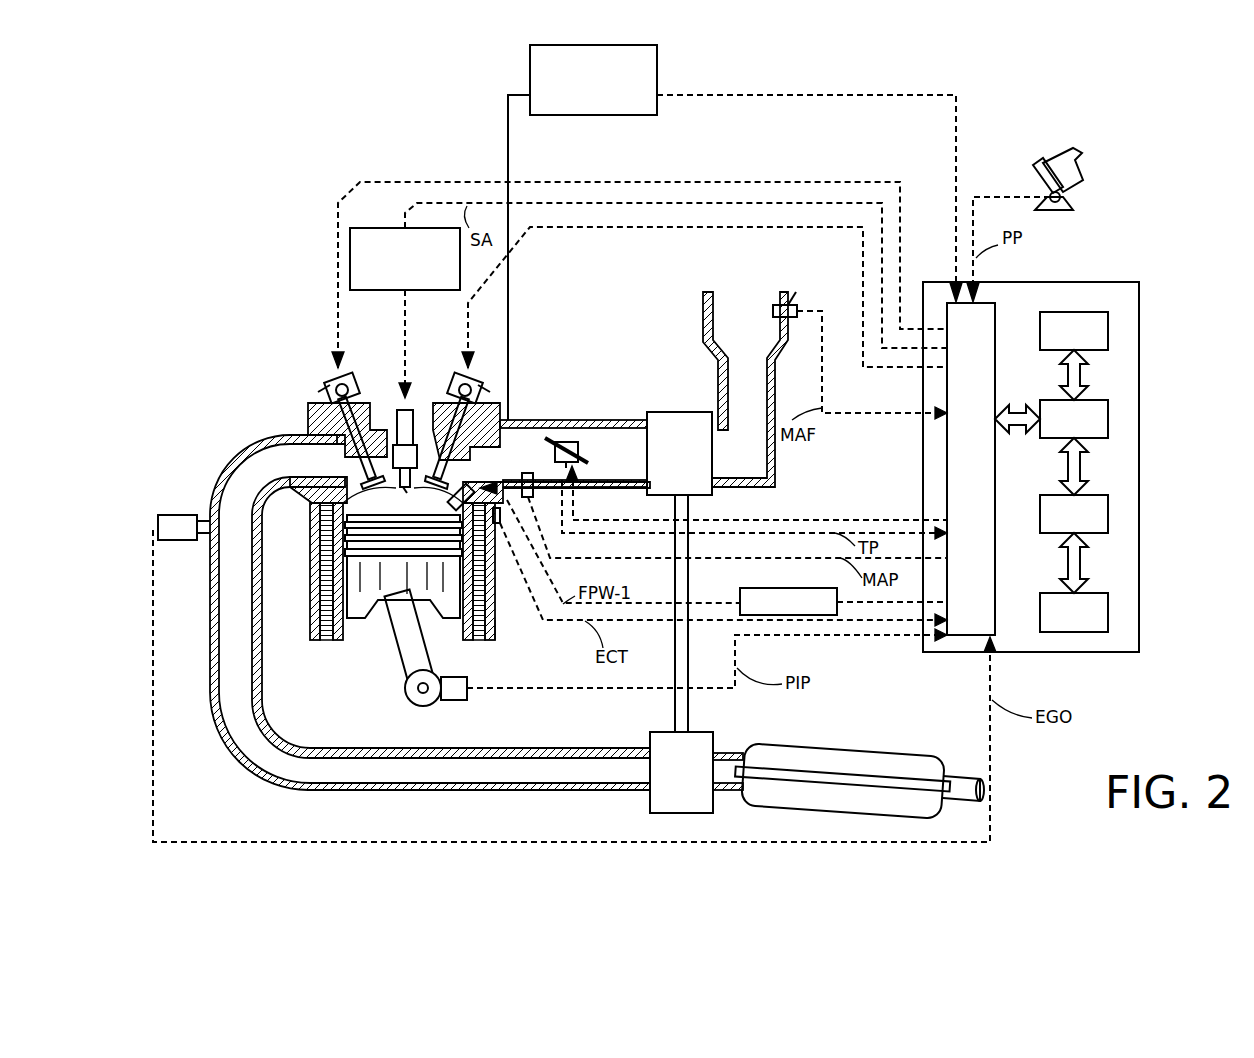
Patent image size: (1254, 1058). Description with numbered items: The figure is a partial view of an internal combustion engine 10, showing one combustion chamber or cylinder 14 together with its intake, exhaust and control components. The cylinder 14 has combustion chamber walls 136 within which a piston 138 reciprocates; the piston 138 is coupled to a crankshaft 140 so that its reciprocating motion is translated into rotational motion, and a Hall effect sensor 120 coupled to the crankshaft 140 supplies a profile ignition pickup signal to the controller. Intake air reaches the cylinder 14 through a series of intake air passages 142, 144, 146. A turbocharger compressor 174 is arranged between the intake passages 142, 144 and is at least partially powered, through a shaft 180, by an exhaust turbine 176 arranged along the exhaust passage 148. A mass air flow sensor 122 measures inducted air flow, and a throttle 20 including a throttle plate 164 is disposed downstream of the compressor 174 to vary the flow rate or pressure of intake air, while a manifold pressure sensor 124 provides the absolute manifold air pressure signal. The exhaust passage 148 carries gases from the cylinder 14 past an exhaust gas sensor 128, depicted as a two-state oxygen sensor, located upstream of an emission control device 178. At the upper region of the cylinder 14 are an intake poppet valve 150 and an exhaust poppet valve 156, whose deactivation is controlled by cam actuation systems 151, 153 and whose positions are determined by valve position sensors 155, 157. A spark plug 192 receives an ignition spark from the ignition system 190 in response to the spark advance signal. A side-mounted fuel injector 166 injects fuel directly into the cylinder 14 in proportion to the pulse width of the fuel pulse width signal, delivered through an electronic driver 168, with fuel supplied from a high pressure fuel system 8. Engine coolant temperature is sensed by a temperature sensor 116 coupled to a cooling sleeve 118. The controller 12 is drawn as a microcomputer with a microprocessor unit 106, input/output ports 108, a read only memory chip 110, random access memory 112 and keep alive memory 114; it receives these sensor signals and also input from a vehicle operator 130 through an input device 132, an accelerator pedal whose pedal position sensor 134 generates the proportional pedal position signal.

The internal combustion engine 10 is at (146, 121).
The high pressure fuel system 8 is at (657, 70).
The ignition system 190 is at (372, 228).
The controller 12 is at (1135, 282).
The input/output ports 108 is at (996, 306).
The read only memory chip 110 is at (1108, 328).
The microprocessor unit 106 is at (1108, 416).
The random access memory 112 is at (1108, 515).
The keep alive memory 114 is at (1108, 612).
The vehicle operator 130 is at (1082, 160).
The input device 132 is at (1035, 170).
The pedal position sensor 134 is at (1066, 199).
The intake air passage 142 is at (745, 389).
The mass air flow sensor 122 is at (792, 305).
The compressor 174 is at (672, 412).
The intake air passage 144 is at (573, 453).
The throttle plate 164 is at (548, 437).
The throttle 20 is at (566, 438).
The manifold pressure sensor 124 is at (533, 497).
The intake air passage 146 is at (556, 473).
The fuel injector 166 is at (472, 484).
The exhaust passage 148 is at (430, 612).
The exhaust gas sensor 128 is at (158, 520).
The exhaust turbine 176 is at (650, 800).
The shaft 180 is at (682, 698).
The emission control device 178 is at (896, 747).
The cylinder 14 is at (311, 500).
The spark plug 192 is at (398, 440).
The exhaust poppet valve 156 is at (355, 440).
The intake poppet valve 150 is at (442, 470).
The cam actuation system 153 is at (350, 378).
The valve position sensor 157 is at (330, 386).
The cam actuation system 151 is at (455, 378).
The valve position sensor 155 is at (482, 386).
The combustion chamber walls 136 is at (352, 632).
The piston 138 is at (388, 605).
The crankshaft 140 is at (410, 706).
The Hall effect sensor 120 is at (460, 702).
The temperature sensor 116 is at (486, 596).
The cooling sleeve 118 is at (497, 608).
The electronic driver 168 is at (749, 590).